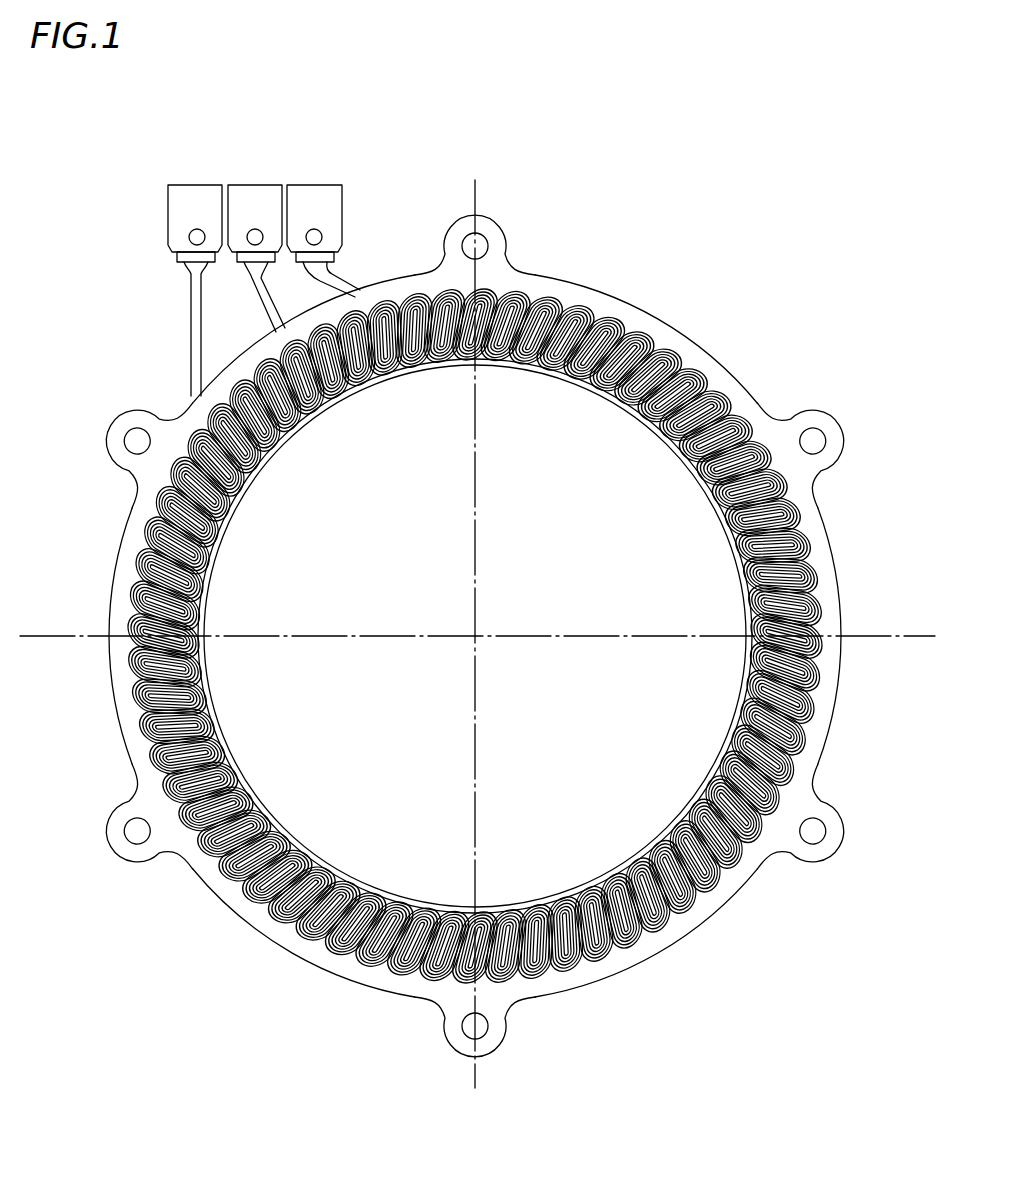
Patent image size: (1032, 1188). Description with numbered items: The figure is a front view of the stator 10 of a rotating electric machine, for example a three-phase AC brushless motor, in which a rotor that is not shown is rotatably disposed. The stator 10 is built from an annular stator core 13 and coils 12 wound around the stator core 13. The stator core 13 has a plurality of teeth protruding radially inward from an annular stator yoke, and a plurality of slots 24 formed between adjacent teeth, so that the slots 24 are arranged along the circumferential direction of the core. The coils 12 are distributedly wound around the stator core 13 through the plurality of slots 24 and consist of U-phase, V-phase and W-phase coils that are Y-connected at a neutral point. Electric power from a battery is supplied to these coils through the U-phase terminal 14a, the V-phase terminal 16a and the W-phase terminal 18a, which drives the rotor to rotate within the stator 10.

The stator 10 is at (490, 589).
The coils 12 is at (128, 528).
The stator core 13 is at (755, 389).
The U-phase terminal 14a is at (193, 196).
The V-phase terminal 16a is at (256, 196).
The W-phase terminal 18a is at (319, 196).
The slots 24 is at (318, 409).